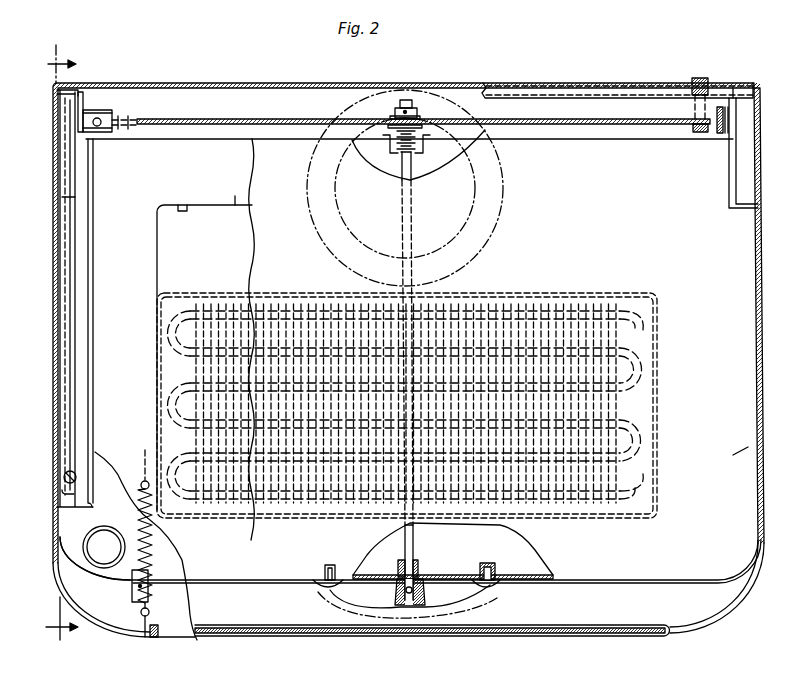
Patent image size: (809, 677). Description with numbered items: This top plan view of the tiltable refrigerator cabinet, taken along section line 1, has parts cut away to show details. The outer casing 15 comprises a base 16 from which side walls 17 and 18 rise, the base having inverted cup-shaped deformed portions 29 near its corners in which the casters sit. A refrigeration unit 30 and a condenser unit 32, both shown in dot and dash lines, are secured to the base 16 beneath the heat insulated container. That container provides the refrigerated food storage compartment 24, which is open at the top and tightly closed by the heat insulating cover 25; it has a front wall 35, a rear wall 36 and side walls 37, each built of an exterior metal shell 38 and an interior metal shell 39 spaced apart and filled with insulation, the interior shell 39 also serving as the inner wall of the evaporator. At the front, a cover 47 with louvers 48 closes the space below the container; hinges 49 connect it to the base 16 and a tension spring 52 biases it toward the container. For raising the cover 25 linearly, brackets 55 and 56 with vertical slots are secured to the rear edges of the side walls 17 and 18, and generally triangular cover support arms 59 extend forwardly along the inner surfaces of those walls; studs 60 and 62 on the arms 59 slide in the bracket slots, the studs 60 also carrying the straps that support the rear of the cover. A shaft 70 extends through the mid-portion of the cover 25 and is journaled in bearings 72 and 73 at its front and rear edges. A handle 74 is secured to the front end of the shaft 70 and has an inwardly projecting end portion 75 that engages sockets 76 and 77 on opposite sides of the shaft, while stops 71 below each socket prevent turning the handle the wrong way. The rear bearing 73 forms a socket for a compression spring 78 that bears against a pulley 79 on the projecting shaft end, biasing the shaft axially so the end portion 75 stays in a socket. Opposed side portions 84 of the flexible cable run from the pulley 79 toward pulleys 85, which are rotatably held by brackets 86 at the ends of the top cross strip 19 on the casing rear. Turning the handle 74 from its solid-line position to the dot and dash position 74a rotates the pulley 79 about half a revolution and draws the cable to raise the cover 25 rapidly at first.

The section line 1 is at (53, 345).
The outer casing 15 is at (770, 94).
The base 16 is at (72, 534).
The side wall 17 is at (55, 326).
The side wall 18 is at (762, 358).
The top cross strip 19 is at (572, 83).
The refrigerated food storage compartment 24 is at (184, 208).
The heat insulating cover 25 is at (735, 456).
The inverted cup-shaped deformed portion 29 is at (103, 530).
The refrigeration unit 30 is at (487, 217).
The condenser unit 32 is at (560, 303).
The front wall 35 is at (224, 568).
The rear wall 36 is at (237, 200).
The side wall 37 is at (148, 272).
The exterior metal shell 38 is at (173, 137).
The interior metal shell 39 is at (170, 238).
The cover 47 is at (706, 614).
The louvers 48 is at (586, 634).
The hinges 49 is at (133, 585).
The tension spring 52 is at (150, 554).
The bracket 55 is at (734, 113).
The bracket 56 is at (80, 96).
The cover support arm 59 is at (68, 284).
The stud 60 is at (720, 107).
The stud 62 is at (97, 110).
The shaft 70 is at (414, 542).
The stops 71 is at (498, 582).
The bearing 72 is at (418, 566).
The bearing 73 is at (417, 163).
The handle 74 is at (500, 587).
The handle position 74a is at (365, 606).
The inwardly projecting end portion 75 is at (496, 572).
The socket 76 is at (490, 565).
The socket 77 is at (330, 565).
The compression spring 78 is at (423, 126).
The pulley 79 is at (400, 112).
The side portions of the cable 84 is at (565, 123).
The pulley 85 is at (693, 132).
The bracket 86 is at (690, 102).